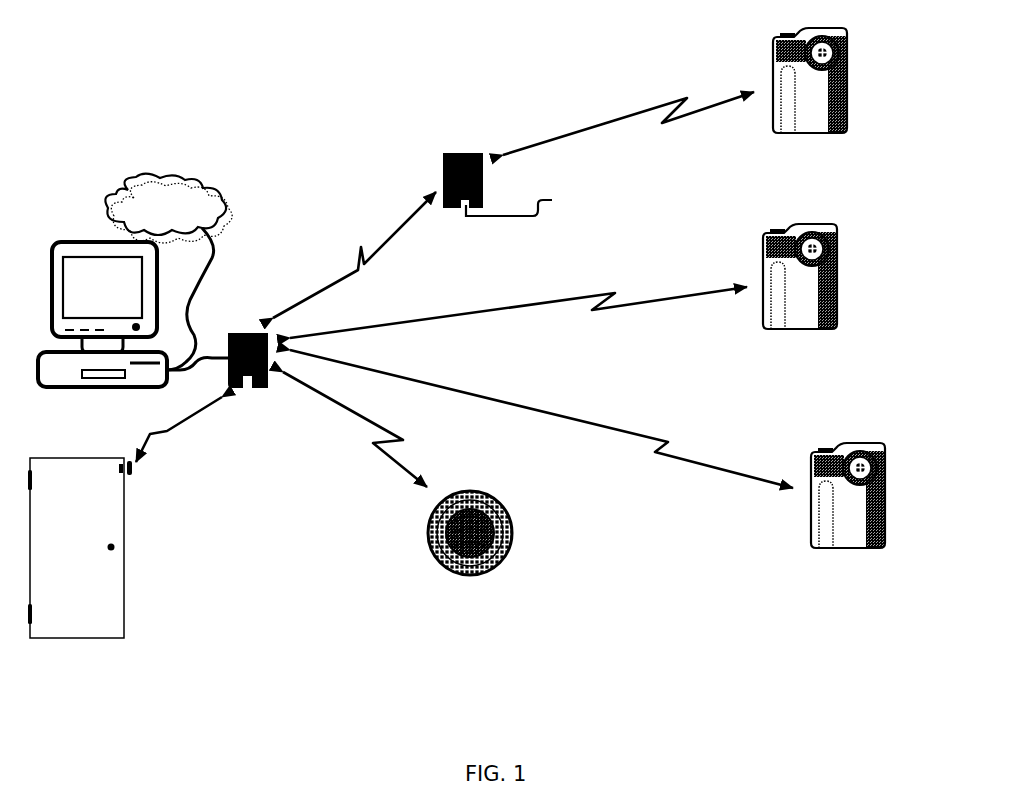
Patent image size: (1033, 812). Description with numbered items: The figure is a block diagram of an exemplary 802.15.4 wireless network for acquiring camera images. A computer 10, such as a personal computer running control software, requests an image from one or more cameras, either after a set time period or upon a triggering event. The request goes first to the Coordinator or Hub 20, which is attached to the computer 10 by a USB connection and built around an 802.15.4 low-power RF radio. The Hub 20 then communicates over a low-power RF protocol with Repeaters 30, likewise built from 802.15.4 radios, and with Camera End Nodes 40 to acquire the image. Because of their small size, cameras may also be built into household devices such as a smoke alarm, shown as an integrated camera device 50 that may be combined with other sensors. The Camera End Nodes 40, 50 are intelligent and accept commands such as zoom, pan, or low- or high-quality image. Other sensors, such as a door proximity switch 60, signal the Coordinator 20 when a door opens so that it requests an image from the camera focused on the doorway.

The computer 10 is at (126, 280).
The Coordinator or Hub 20 is at (231, 367).
The Repeater 30 is at (531, 202).
The Camera End Node 40 is at (834, 314).
The integrated camera device 50 is at (518, 559).
The door proximity switch 60 is at (120, 549).